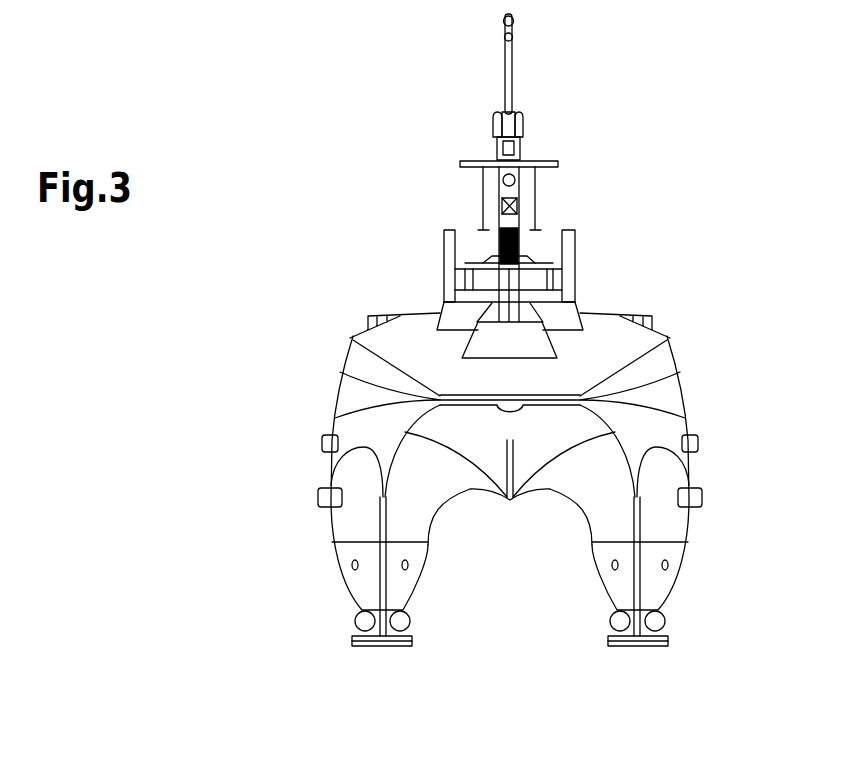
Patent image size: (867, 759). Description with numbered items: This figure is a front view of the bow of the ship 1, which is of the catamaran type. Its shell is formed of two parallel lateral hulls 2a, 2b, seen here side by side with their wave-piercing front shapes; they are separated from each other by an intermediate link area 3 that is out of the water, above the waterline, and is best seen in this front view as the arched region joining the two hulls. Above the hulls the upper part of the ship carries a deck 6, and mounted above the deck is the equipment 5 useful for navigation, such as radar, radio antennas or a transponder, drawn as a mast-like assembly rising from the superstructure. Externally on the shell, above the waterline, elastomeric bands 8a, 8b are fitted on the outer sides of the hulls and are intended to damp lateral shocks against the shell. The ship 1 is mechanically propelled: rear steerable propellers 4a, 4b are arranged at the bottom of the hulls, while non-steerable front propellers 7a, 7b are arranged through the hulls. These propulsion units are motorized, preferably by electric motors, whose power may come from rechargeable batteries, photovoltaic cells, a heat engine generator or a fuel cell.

The ship 1 is at (666, 205).
The lateral hull 2a is at (683, 548).
The lateral hull 2b is at (345, 552).
The intermediate link area 3 is at (510, 508).
The rear steerable propeller 4a is at (668, 610).
The rear steerable propeller 4b is at (355, 612).
The equipment 5 is at (527, 152).
The deck 6 is at (410, 335).
The front propeller 7a is at (613, 563).
The front propeller 7b is at (407, 563).
The elastomeric band 8a is at (698, 442).
The elastomeric band 8b is at (322, 445).